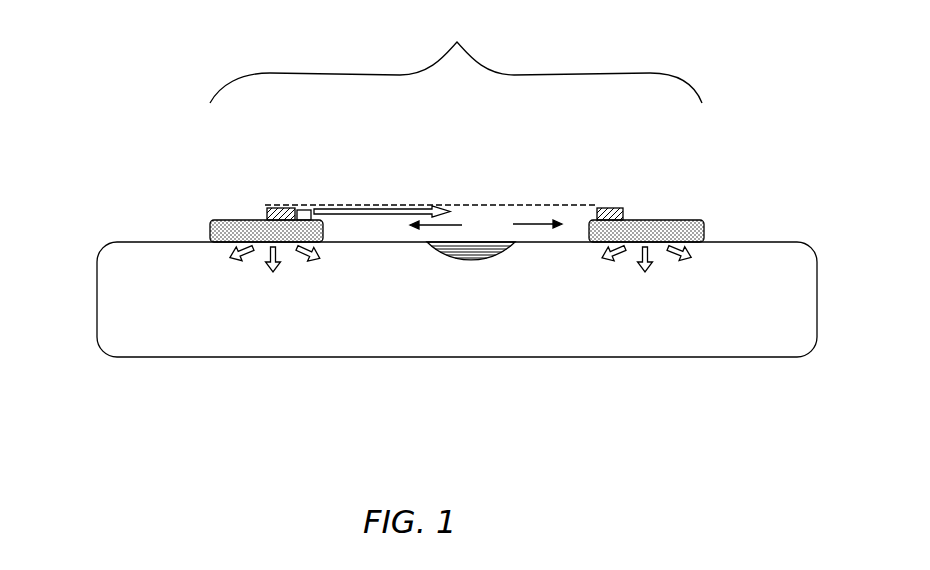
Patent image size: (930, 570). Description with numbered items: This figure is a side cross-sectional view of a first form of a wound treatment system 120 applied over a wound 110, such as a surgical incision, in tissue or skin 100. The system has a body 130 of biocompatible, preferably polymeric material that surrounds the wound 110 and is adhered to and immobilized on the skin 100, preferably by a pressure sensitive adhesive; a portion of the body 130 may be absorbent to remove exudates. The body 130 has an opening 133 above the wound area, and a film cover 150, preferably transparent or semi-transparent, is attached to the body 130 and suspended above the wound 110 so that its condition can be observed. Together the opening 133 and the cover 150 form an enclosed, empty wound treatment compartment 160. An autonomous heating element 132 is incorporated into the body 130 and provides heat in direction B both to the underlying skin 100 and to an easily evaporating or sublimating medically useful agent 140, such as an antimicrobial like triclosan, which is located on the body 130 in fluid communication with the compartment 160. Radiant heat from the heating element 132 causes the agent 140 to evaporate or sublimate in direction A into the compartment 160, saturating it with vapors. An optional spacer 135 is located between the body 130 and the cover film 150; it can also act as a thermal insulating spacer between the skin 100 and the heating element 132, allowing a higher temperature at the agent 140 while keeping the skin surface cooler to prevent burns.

The tissue or skin 100 is at (97, 300).
The wound 110 is at (470, 262).
The wound treatment system 120 is at (456, 59).
The body 130 is at (398, 222).
The autonomous heating element 132 is at (212, 232).
The opening 133 is at (486, 227).
The spacer 135 is at (282, 206).
The medically useful agent 140 is at (302, 208).
The film cover 150 is at (525, 204).
The wound treatment compartment 160 is at (382, 228).
The direction A is at (378, 210).
The direction B is at (273, 272).